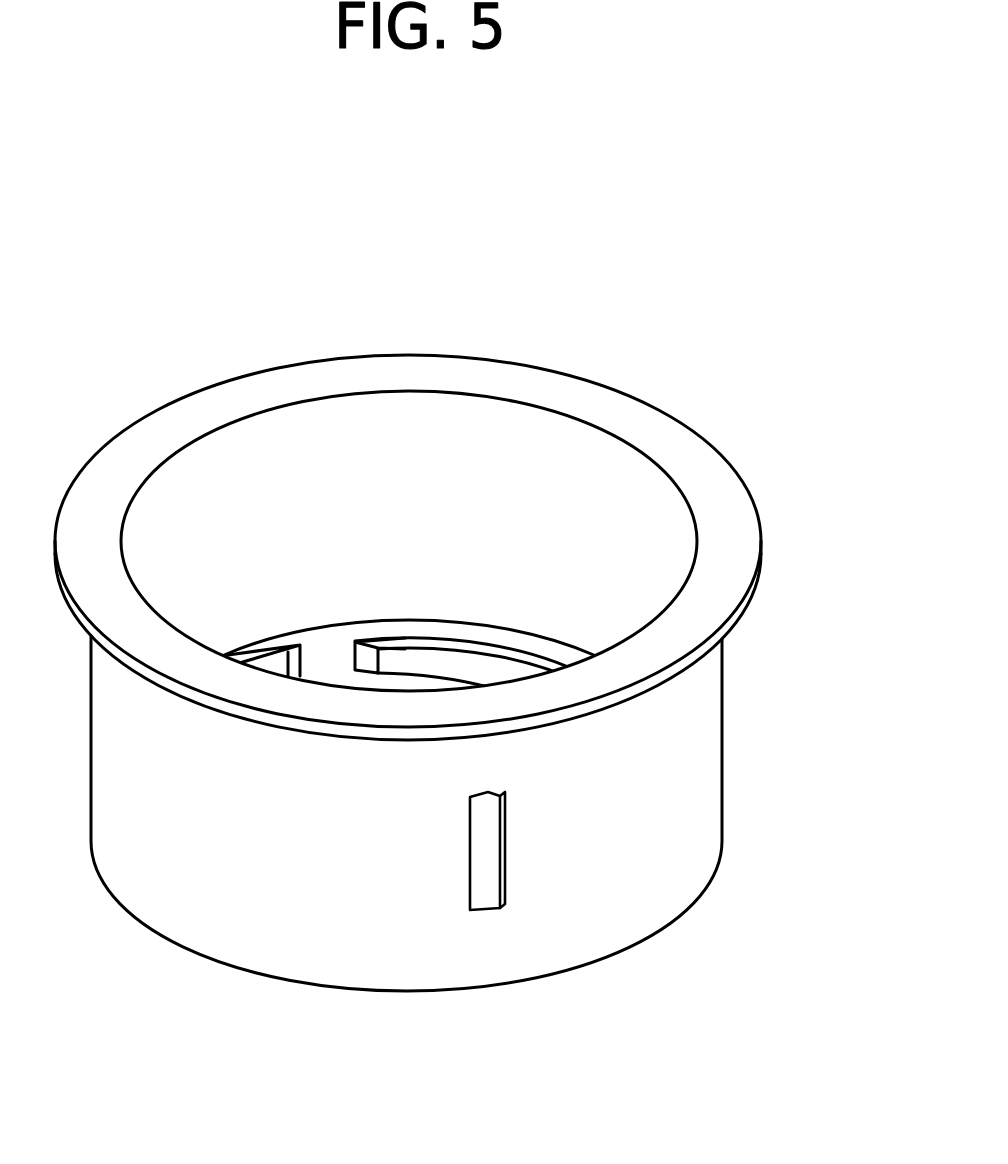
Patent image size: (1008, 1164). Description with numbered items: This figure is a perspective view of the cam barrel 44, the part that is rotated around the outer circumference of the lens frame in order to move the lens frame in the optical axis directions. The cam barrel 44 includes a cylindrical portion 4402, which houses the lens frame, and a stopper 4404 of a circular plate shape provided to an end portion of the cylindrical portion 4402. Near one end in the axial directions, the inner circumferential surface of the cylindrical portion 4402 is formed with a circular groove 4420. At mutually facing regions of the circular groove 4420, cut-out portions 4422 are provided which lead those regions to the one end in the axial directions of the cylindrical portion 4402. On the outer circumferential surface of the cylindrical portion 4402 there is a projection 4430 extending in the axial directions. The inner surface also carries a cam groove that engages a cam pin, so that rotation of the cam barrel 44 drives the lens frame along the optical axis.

The cam barrel 44 is at (419, 322).
The cylindrical portion 4402 is at (673, 745).
The stopper 4404 is at (738, 542).
The circular groove 4420 is at (517, 636).
The cut-out portions 4422 is at (358, 662).
The projection 4430 is at (495, 850).